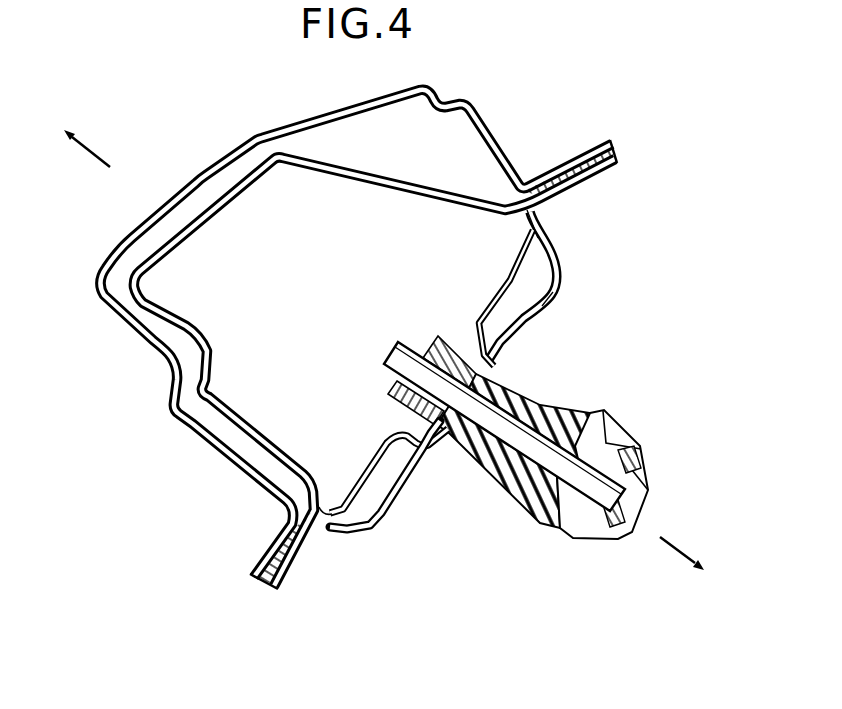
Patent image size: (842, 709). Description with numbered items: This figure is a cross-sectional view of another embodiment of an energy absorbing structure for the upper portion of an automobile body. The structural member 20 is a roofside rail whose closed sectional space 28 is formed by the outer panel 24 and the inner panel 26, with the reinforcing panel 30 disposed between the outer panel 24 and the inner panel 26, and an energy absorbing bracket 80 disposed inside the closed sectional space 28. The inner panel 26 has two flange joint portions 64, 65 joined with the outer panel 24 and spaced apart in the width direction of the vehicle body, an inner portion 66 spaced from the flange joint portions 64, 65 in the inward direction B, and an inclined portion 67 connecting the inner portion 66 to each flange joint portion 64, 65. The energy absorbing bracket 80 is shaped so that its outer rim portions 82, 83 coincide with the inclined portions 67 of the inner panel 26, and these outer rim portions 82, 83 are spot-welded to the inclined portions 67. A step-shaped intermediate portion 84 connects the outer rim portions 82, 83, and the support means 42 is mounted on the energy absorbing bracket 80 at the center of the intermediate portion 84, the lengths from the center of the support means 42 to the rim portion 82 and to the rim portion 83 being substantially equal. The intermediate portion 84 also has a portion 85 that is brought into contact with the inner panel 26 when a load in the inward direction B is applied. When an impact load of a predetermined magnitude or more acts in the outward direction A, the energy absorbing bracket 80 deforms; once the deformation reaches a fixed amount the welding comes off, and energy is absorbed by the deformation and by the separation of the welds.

The structural member 20 is at (369, 350).
The outer panel 24 is at (148, 206).
The reinforcing panel 30 is at (369, 172).
The closed sectional space 28 is at (407, 223).
The flange joint portion 64 is at (283, 563).
The flange joint portion 65 is at (598, 178).
The outer rim portion 83 is at (521, 232).
The inclined portion 67 is at (552, 261).
The intermediate portion 84 is at (540, 310).
The inner portion 66 is at (520, 333).
The contact portion 85 is at (506, 360).
The outer rim portion 82 is at (337, 532).
The energy absorbing bracket 80 is at (390, 466).
The inner panel 26 is at (516, 486).
The support means 42 is at (512, 505).
The outward direction A is at (110, 166).
The inward direction B is at (687, 540).